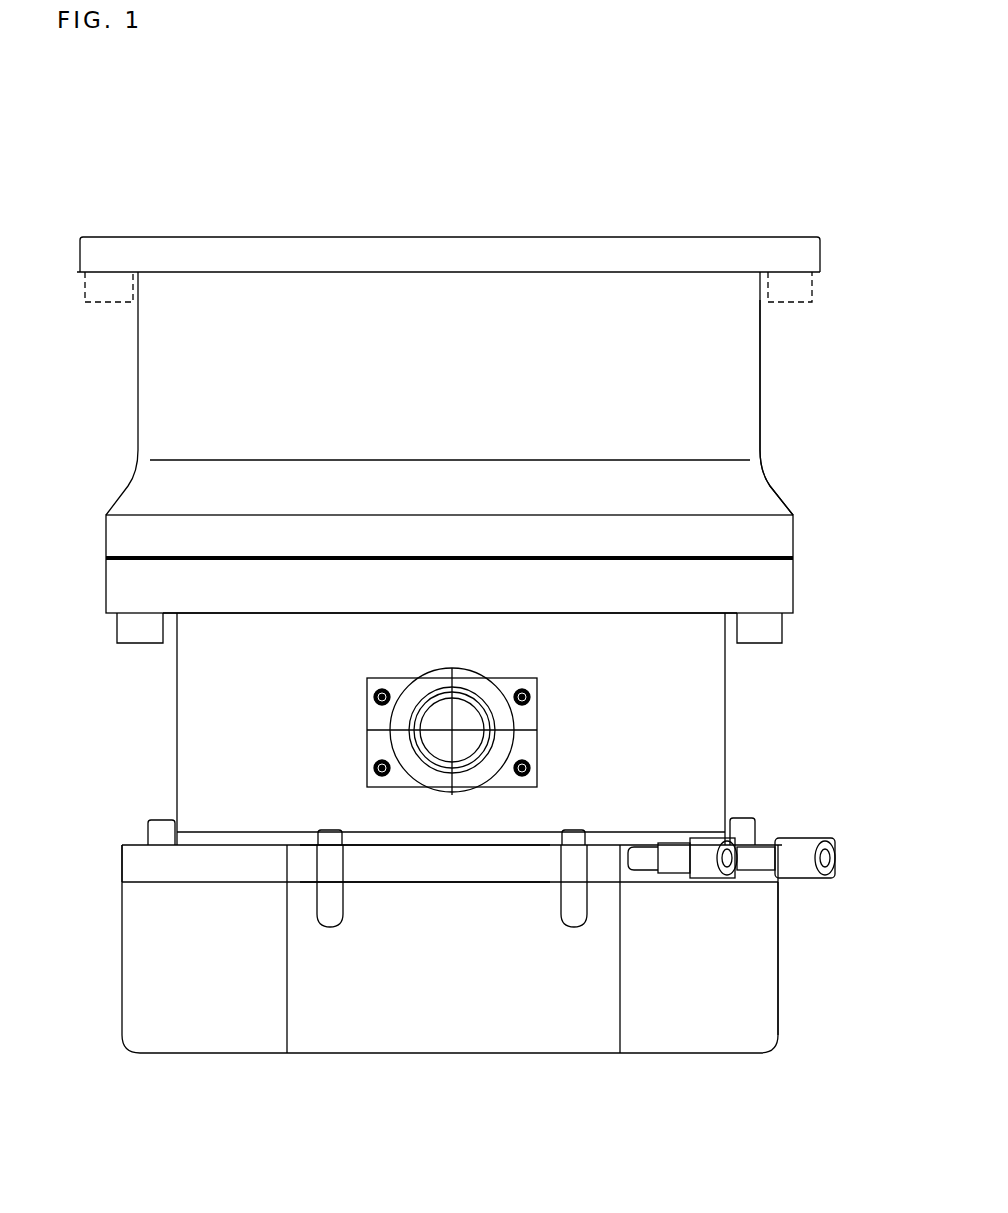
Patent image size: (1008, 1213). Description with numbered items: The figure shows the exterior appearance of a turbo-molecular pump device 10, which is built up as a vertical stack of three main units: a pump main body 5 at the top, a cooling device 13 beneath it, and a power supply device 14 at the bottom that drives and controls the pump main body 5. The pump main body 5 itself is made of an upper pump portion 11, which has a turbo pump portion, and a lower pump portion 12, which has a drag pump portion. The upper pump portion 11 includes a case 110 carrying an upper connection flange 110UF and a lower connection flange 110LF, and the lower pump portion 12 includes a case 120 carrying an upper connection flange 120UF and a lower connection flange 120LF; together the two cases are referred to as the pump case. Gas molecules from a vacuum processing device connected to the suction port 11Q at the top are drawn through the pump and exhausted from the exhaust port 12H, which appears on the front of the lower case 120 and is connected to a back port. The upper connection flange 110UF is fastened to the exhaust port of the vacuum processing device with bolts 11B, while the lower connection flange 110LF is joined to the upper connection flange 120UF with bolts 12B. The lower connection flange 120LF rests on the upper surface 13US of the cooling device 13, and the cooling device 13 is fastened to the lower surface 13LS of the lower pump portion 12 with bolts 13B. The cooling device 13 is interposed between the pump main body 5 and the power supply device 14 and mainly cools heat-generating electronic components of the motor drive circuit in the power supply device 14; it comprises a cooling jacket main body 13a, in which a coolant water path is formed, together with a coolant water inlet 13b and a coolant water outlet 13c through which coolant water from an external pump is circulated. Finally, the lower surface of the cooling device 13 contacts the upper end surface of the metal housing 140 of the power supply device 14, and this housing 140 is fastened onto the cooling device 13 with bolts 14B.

The pump main body 5 is at (888, 562).
The turbo-molecular pump device 10 is at (802, 438).
The upper pump portion 11 is at (795, 500).
The suction port 11Q is at (450, 237).
The bolts 11B is at (108, 303).
The case 110 is at (733, 395).
The upper connection flange 110UF is at (110, 250).
The lower connection flange 110LF is at (138, 488).
The lower pump portion 12 is at (797, 590).
The bolts 12B is at (137, 635).
The exhaust port 12H is at (475, 693).
The case 120 is at (712, 751).
The upper connection flange 120UF is at (202, 603).
The lower connection flange 120LF is at (211, 838).
The cooling device 13 is at (448, 874).
The cooling jacket main body 13a is at (248, 870).
The coolant water inlet 13b is at (802, 848).
The coolant water outlet 13c is at (703, 848).
The bolts 13B is at (163, 818).
The upper surface 13US is at (133, 842).
The lower surface 13LS is at (165, 883).
The power supply device 14 is at (678, 1056).
The bolts 14B is at (327, 827).
The housing 140 is at (765, 960).